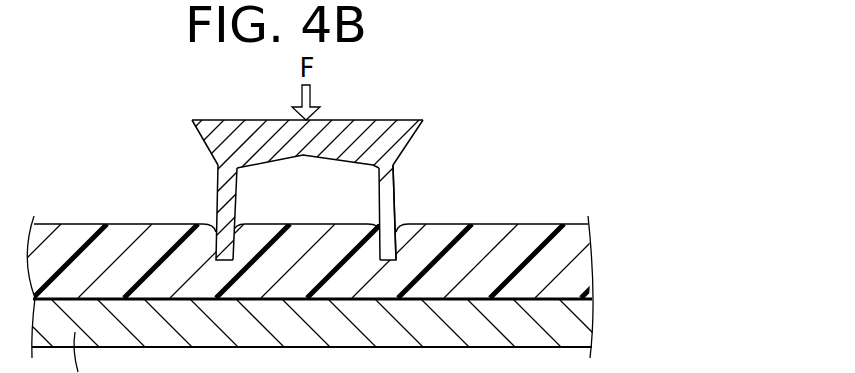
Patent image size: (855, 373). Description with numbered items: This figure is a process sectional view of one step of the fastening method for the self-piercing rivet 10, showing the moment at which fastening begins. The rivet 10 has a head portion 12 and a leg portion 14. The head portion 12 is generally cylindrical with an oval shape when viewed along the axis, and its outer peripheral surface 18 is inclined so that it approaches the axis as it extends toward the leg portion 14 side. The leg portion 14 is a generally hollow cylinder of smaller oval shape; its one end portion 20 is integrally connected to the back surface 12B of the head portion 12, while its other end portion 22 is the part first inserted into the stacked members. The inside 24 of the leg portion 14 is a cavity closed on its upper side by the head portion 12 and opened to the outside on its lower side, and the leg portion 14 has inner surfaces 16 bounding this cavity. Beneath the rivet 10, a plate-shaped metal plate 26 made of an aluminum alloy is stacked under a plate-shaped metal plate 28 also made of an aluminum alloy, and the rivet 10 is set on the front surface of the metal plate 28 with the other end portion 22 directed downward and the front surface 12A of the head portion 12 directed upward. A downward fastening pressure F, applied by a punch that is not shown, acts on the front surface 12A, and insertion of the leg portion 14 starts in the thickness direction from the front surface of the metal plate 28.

The self-piercing rivet 10 is at (268, 190).
The head portion 12 is at (316, 143).
The front surface of the head portion 12A is at (222, 120).
The back surface of the head portion 12B is at (356, 165).
The leg portion 14 is at (365, 208).
The inner surface of leg 16 is at (235, 206).
The outer peripheral surface of the head portion 18 is at (410, 139).
The one end portion of the leg portion 20 is at (398, 177).
The other end portion of the leg portion 22 is at (396, 254).
The inside of the leg portion 24 is at (272, 191).
The metal plate 26 is at (83, 0).
The metal plate 28 is at (75, 243).